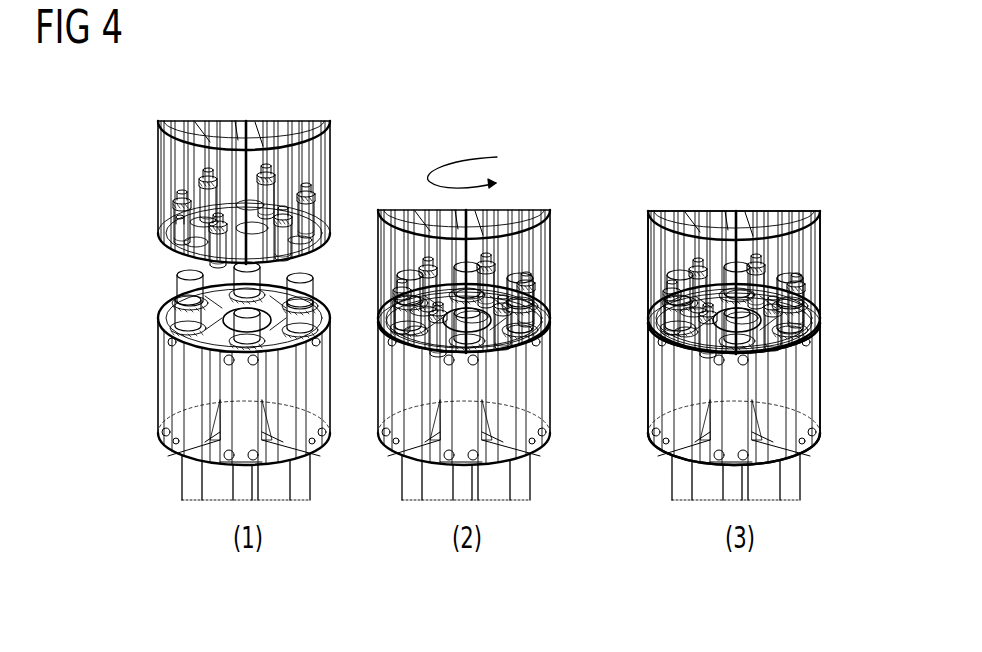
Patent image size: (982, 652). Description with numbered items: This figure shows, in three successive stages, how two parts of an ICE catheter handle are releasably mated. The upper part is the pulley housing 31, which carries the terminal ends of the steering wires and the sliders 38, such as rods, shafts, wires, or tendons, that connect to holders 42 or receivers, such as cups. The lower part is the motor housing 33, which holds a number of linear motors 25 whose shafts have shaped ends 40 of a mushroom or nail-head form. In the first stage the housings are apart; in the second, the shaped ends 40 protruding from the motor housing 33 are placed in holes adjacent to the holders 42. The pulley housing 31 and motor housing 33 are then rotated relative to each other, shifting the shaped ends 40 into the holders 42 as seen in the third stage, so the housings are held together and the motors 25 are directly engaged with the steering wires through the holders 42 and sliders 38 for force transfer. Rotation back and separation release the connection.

The sliders 38 is at (175, 178).
The holder 42 is at (171, 221).
The shaped ends 40 is at (160, 320).
The motors 25 is at (190, 390).
The pulley housing 31 is at (812, 262).
The motor housing 33 is at (802, 390).